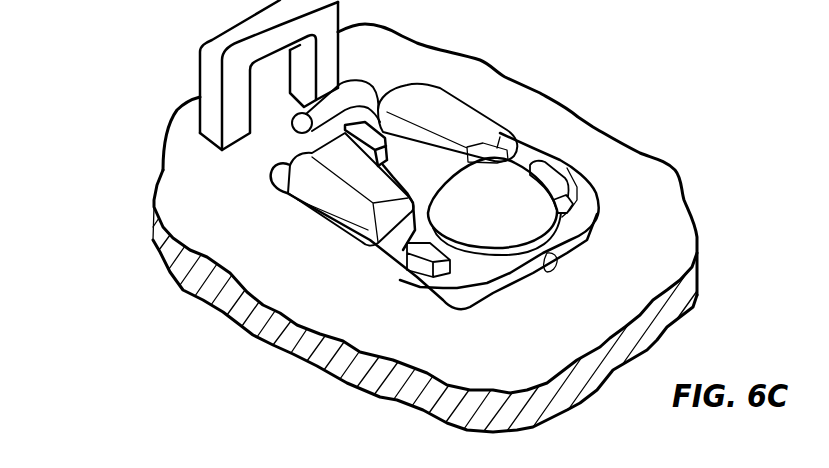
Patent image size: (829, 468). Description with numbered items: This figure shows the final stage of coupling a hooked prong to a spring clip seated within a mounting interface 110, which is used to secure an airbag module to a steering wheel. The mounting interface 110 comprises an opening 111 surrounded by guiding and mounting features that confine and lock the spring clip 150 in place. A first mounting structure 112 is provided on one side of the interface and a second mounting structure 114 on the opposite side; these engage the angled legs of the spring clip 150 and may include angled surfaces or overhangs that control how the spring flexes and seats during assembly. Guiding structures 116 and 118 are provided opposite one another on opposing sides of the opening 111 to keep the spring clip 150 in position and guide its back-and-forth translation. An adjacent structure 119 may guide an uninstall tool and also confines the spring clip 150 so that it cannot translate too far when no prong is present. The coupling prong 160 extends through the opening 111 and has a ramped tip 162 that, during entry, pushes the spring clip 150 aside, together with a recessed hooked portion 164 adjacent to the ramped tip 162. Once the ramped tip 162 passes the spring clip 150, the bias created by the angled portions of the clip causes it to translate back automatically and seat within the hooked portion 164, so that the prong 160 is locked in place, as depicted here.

The mounting interface 110 is at (627, 80).
The opening 111 is at (557, 254).
The first mounting structure 112 is at (438, 110).
The second mounting structure 114 is at (313, 187).
The guiding/mounting structure 116 is at (543, 174).
The guiding/mounting structure 118 is at (420, 264).
The adjacent structure 119 is at (218, 42).
The spring clip 150 is at (605, 208).
The coupling prong 160 is at (484, 217).
The ramped tip 162 is at (533, 210).
The hooked portion 164 is at (465, 260).